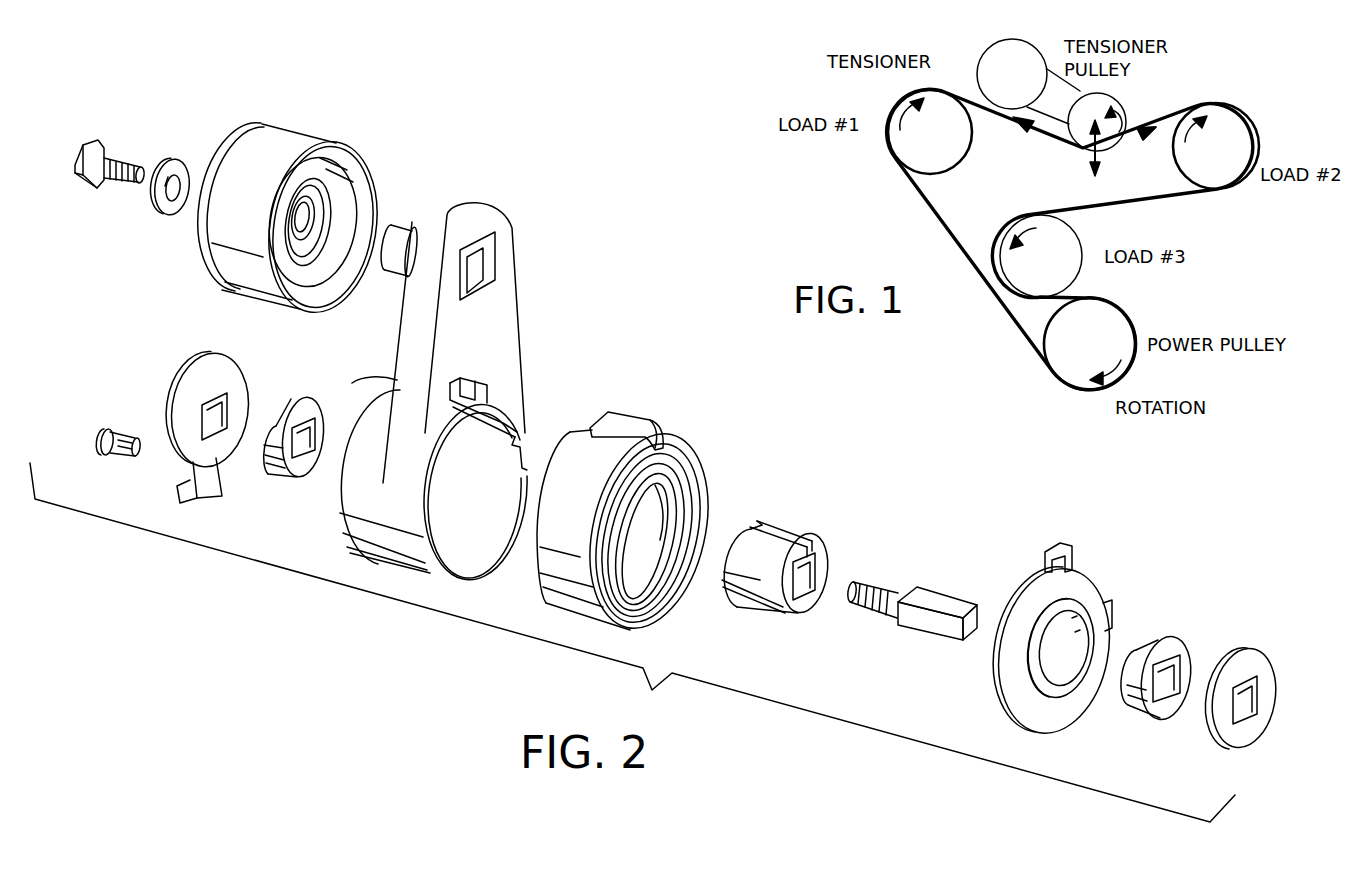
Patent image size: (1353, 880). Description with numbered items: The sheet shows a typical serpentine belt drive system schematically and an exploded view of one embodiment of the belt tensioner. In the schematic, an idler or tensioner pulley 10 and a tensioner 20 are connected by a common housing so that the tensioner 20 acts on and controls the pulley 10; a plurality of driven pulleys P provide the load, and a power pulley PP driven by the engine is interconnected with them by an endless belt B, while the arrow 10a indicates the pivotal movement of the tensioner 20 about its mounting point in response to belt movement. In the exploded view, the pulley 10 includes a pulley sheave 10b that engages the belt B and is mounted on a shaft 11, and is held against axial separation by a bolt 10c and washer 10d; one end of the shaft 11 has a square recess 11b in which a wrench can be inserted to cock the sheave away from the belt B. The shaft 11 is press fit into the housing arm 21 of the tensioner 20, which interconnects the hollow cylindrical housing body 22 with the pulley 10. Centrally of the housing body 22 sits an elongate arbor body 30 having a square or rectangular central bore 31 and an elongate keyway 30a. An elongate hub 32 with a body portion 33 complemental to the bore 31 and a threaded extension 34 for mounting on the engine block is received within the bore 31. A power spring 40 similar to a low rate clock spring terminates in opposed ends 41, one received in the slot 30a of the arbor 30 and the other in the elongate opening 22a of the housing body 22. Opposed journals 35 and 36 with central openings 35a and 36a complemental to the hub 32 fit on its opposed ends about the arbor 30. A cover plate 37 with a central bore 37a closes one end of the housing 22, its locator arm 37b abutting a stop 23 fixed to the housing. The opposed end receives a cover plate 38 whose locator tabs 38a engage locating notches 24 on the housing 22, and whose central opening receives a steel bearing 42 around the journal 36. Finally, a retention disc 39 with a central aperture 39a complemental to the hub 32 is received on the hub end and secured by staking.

In FIG. 1, the idler or tensioner pulley 10 is at (1140, 108).
In FIG. 2, the idler or tensioner pulley 10 is at (315, 202).
In FIG. 1, the arrow 10a is at (1083, 145).
In FIG. 2, the pulley sheave 10b is at (306, 140).
In FIG. 2, the bolt 10c is at (92, 142).
In FIG. 2, the washer 10d is at (167, 166).
In FIG. 2, the shaft 11 is at (407, 226).
In FIG. 2, the square recess 11b is at (490, 264).
In FIG. 1, the tensioner 20 is at (1047, 82).
In FIG. 2, the tensioner 20 is at (450, 378).
In FIG. 1, the housing arm 21 is at (1064, 91).
In FIG. 2, the housing arm 21 is at (493, 343).
In FIG. 2, the housing body 22 is at (435, 457).
In FIG. 2, the elongate opening 22a is at (397, 380).
In FIG. 2, the stop 23 is at (104, 440).
In FIG. 2, the locating notches 24 is at (522, 462).
In FIG. 2, the arbor body 30 is at (802, 557).
In FIG. 2, the keyway 30a is at (786, 540).
In FIG. 2, the central bore 31 is at (817, 579).
In FIG. 2, the hub 32 is at (912, 620).
In FIG. 2, the body portion 33 is at (929, 638).
In FIG. 2, the threaded extension 34 is at (868, 614).
In FIG. 2, the journal 35 is at (291, 454).
In FIG. 2, the central opening 35a is at (295, 460).
In FIG. 2, the journal 36 is at (1196, 681).
In FIG. 2, the central opening 36a is at (1173, 663).
In FIG. 2, the cover plate 37 is at (222, 445).
In FIG. 2, the central bore 37a is at (228, 408).
In FIG. 2, the locator arm 37b is at (188, 505).
In FIG. 2, the cover plate 38 is at (1070, 638).
In FIG. 2, the locator tabs 38a is at (1076, 512).
In FIG. 2, the retention disc 39 is at (1266, 700).
In FIG. 2, the central aperture 39a is at (1250, 718).
In FIG. 2, the power spring 40 is at (646, 515).
In FIG. 2, the opposed ends 41 is at (630, 421).
In FIG. 2, the steel bearing 42 is at (1036, 676).
In FIG. 1, the endless belt B is at (938, 222).
In FIG. 1, the driven pulleys P is at (912, 146).
In FIG. 1, the power pulley PP is at (1056, 365).